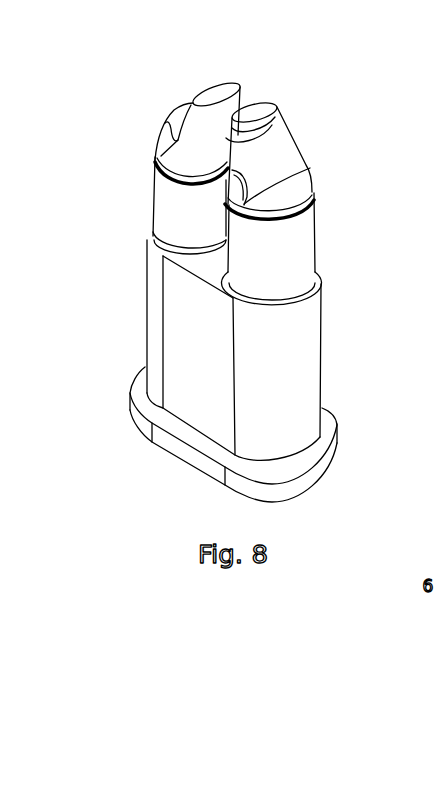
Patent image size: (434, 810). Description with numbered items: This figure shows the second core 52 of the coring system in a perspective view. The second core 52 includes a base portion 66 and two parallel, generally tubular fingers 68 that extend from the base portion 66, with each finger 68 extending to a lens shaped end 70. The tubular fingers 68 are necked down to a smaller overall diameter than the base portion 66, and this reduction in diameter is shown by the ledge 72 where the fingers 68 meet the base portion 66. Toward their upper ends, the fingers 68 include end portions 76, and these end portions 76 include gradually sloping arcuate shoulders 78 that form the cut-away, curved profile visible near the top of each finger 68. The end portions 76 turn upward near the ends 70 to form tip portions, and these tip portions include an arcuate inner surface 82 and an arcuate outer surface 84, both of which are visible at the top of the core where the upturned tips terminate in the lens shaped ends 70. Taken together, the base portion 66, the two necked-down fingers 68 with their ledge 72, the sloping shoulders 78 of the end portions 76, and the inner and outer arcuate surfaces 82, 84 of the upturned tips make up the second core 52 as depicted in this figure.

The second core 52 is at (144, 466).
The base portion 66 is at (177, 343).
The tubular fingers 68 is at (173, 213).
The lens shaped end 70 is at (215, 92).
The ledge 72 is at (318, 268).
The end portions 76 is at (285, 180).
The arcuate shoulders 78 is at (178, 127).
The arcuate inner surface 82 is at (248, 105).
The arcuate outer surface 84 is at (282, 130).